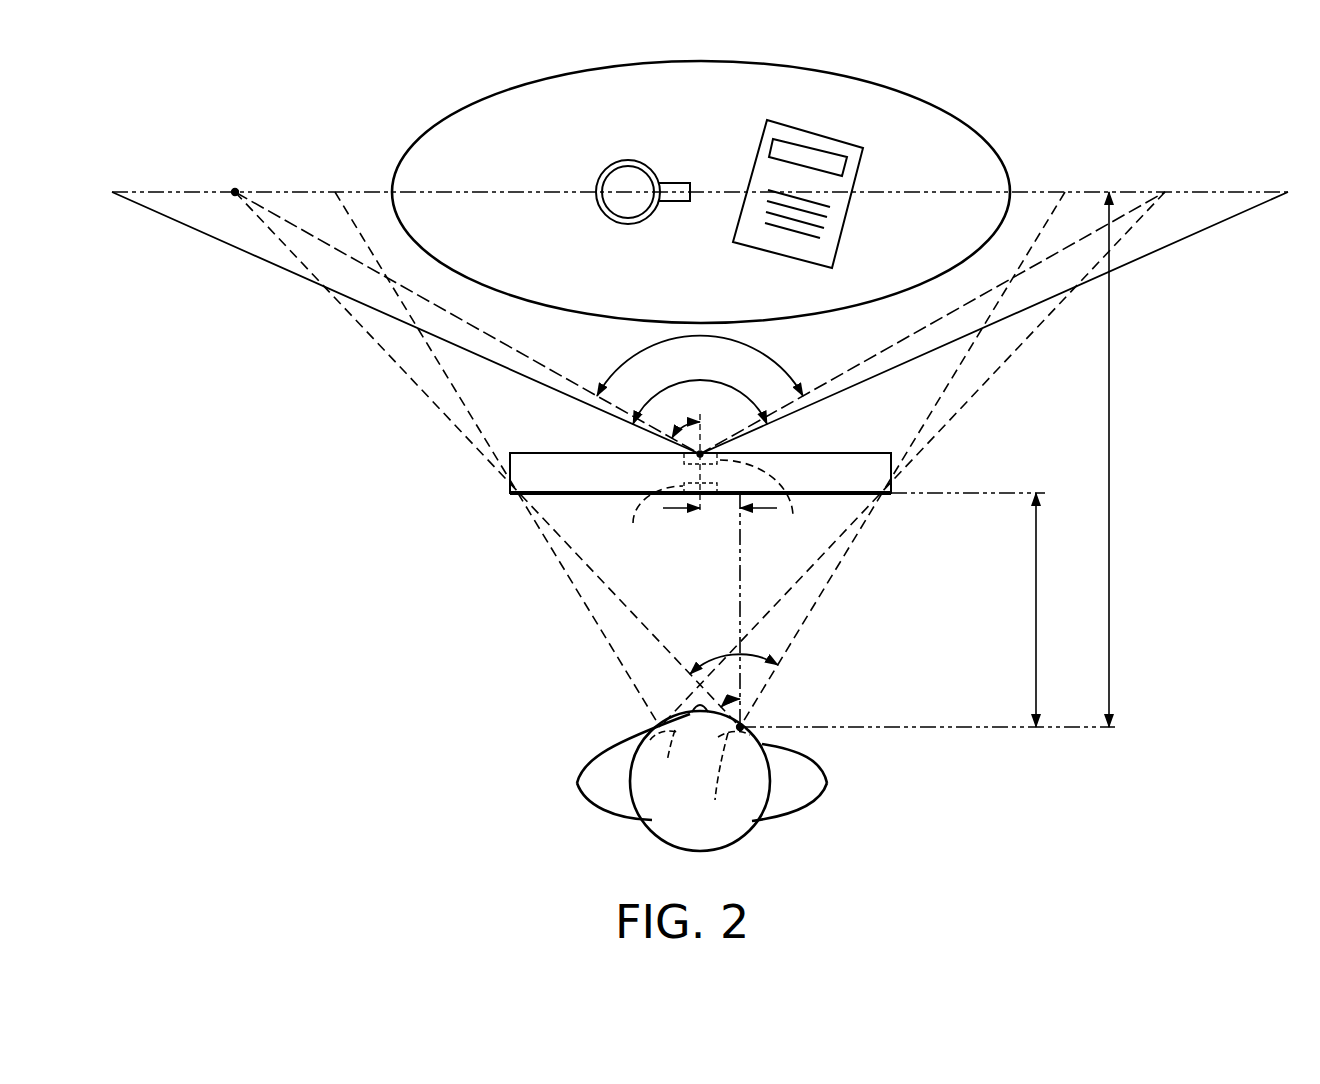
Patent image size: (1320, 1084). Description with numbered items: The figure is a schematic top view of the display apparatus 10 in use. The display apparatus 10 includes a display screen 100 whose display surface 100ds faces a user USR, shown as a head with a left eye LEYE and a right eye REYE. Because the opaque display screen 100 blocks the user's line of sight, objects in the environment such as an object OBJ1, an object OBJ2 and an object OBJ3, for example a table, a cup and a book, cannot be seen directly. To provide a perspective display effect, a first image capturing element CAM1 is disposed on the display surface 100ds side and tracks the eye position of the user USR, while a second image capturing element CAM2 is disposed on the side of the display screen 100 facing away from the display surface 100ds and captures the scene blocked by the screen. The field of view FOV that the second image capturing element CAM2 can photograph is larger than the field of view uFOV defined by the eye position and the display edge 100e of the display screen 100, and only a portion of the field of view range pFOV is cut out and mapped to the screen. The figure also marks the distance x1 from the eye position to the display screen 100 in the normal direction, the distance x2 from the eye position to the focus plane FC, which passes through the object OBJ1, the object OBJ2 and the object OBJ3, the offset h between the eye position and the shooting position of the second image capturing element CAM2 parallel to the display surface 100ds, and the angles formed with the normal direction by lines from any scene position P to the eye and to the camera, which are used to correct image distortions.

The display apparatus 10 is at (295, 462).
The display screen 100 is at (528, 467).
The display edge 100e is at (509, 497).
The display surface 100ds is at (561, 497).
The first image capturing element CAM1 is at (636, 522).
The second image capturing element CAM2 is at (774, 503).
The object OBJ1 is at (445, 140).
The object OBJ2 is at (606, 168).
The object OBJ3 is at (765, 162).
The user USR is at (608, 770).
The left eye LEYE is at (665, 762).
The right eye REYE is at (715, 782).
The focus plane FC is at (182, 190).
The any position in the scene P is at (235, 189).
The field of view FOV is at (700, 323).
The portion of the field of view range pFOV is at (640, 356).
The field of view of the user uFOV is at (712, 656).
The distance between eye position and camera position parallel to display surface h is at (720, 525).
The distance between eye position and display screen x1 is at (1052, 610).
The distance between eye position and scene position x2 is at (1125, 459).